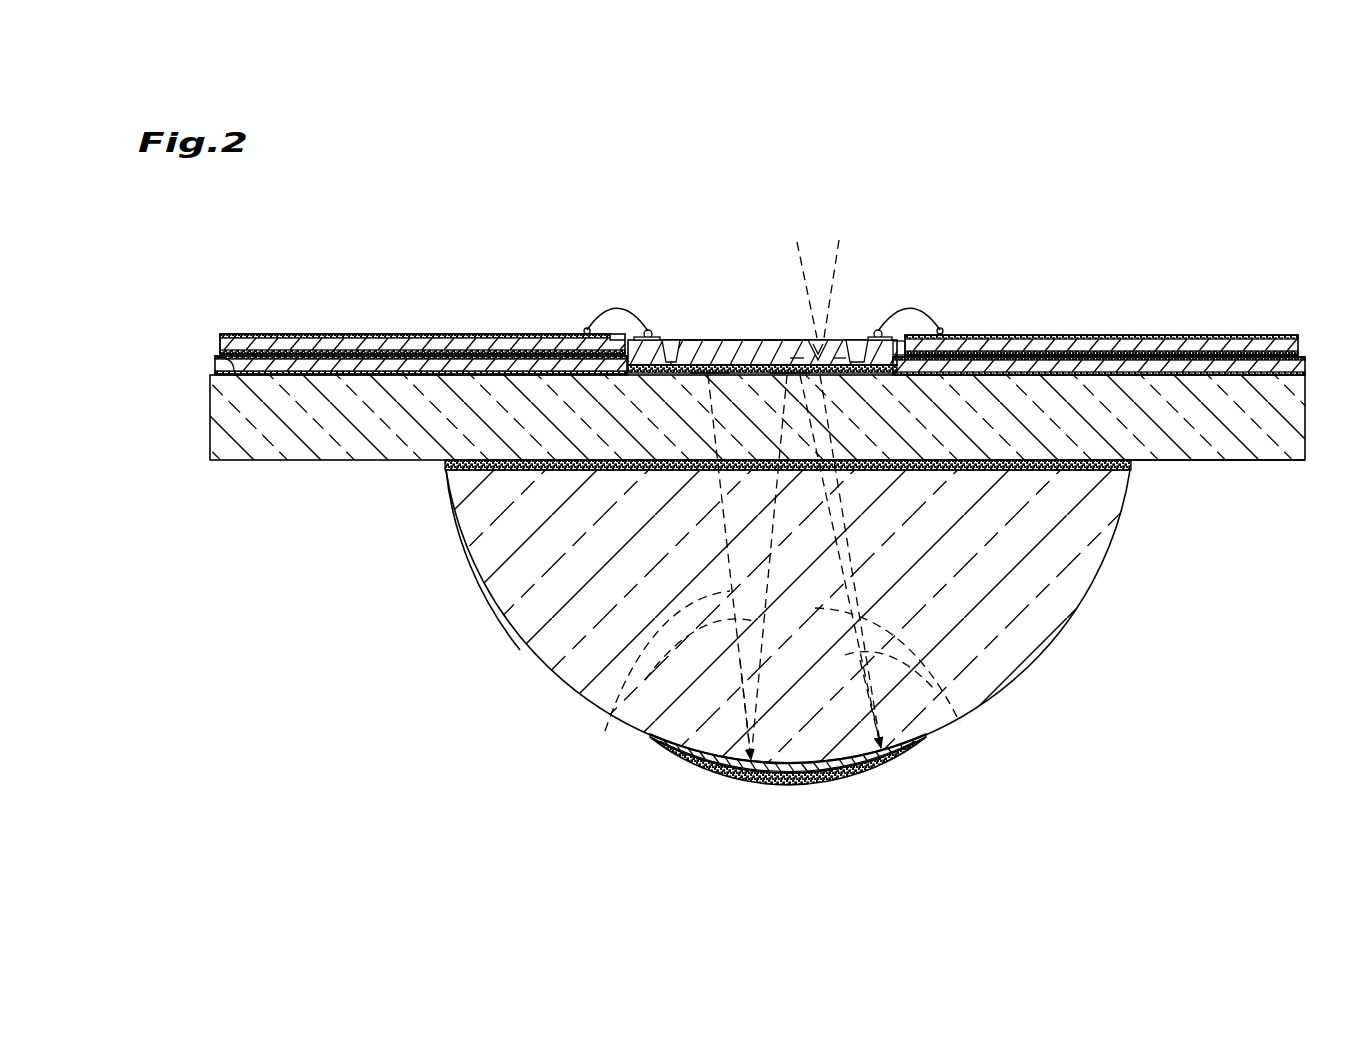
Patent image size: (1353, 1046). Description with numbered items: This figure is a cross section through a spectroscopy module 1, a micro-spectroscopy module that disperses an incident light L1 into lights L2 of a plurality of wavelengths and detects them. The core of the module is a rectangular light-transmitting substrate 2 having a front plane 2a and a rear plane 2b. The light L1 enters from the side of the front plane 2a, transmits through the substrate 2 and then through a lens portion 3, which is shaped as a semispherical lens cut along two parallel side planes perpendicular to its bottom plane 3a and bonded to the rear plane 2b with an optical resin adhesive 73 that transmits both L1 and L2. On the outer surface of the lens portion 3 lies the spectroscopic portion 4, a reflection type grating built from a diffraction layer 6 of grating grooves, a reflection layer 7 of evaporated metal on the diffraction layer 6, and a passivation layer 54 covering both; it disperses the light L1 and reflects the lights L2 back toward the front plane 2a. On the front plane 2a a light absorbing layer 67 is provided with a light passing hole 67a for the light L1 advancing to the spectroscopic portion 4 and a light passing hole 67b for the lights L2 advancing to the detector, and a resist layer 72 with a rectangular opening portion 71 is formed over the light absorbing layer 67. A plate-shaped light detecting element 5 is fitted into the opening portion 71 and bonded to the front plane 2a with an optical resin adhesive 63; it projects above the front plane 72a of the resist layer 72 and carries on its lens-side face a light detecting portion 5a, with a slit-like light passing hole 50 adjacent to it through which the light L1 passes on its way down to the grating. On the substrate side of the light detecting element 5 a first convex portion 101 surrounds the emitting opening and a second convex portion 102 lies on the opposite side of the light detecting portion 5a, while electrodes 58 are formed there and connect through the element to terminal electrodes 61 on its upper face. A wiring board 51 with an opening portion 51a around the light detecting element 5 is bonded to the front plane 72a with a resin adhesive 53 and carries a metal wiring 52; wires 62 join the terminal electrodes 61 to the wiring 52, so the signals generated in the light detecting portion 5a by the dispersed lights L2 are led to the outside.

The spectroscopy module 1 is at (1113, 196).
The substrate 2 is at (1297, 425).
The front plane 2a is at (1197, 373).
The rear plane 2b is at (1256, 462).
The lens portion 3 is at (1030, 660).
The bottom plane 3a is at (1132, 466).
The spectroscopic portion 4 is at (693, 772).
The light detecting element 5 is at (740, 338).
The light detecting portion 5a is at (777, 343).
The diffraction layer 6 is at (873, 765).
The reflection layer 7 is at (820, 774).
The light passing hole 50 is at (826, 343).
The wiring board 51 is at (220, 342).
The opening portion 51a is at (630, 340).
The wiring 52 is at (420, 330).
The resin adhesive 53 is at (222, 366).
The passivation layer 54 is at (760, 784).
The electrodes 58 is at (650, 374).
The terminal electrodes 61 is at (650, 329).
The wires 62 is at (587, 327).
The optical resin adhesive 63 is at (716, 342).
The light absorbing layer 67 is at (236, 375).
The light passing hole 67a is at (791, 378).
The light passing hole 67b is at (708, 376).
The opening portion 71 is at (897, 350).
The resist layer 72 is at (1290, 370).
The front plane 72a is at (1140, 356).
The optical resin adhesive 73 is at (478, 470).
The first convex portion 101 is at (797, 345).
The second convex portion 102 is at (613, 358).
The light L1 is at (797, 242).
The lights L2 is at (615, 731).